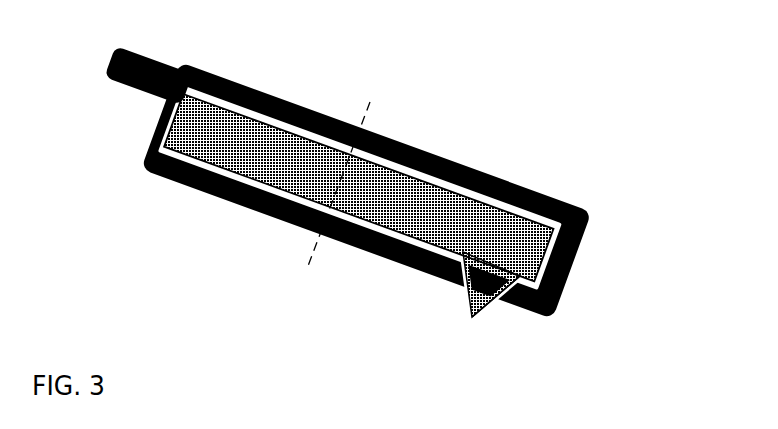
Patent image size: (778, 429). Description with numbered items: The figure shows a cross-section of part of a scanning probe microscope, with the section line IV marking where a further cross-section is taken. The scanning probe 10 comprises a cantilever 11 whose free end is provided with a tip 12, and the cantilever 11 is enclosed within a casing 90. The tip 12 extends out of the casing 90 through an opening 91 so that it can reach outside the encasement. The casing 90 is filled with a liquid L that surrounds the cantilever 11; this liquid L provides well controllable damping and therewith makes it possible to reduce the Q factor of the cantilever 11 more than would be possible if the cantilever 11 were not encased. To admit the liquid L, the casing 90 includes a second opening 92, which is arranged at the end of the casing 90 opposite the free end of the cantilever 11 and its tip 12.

The scanning probe 10 is at (524, 211).
The cantilever 11 is at (300, 160).
The tip 12 is at (484, 291).
The casing 90 is at (241, 208).
The opening 91 is at (463, 289).
The second opening 92 is at (139, 92).
The liquid L is at (526, 221).
The section line IV- IV is at (341, 181).